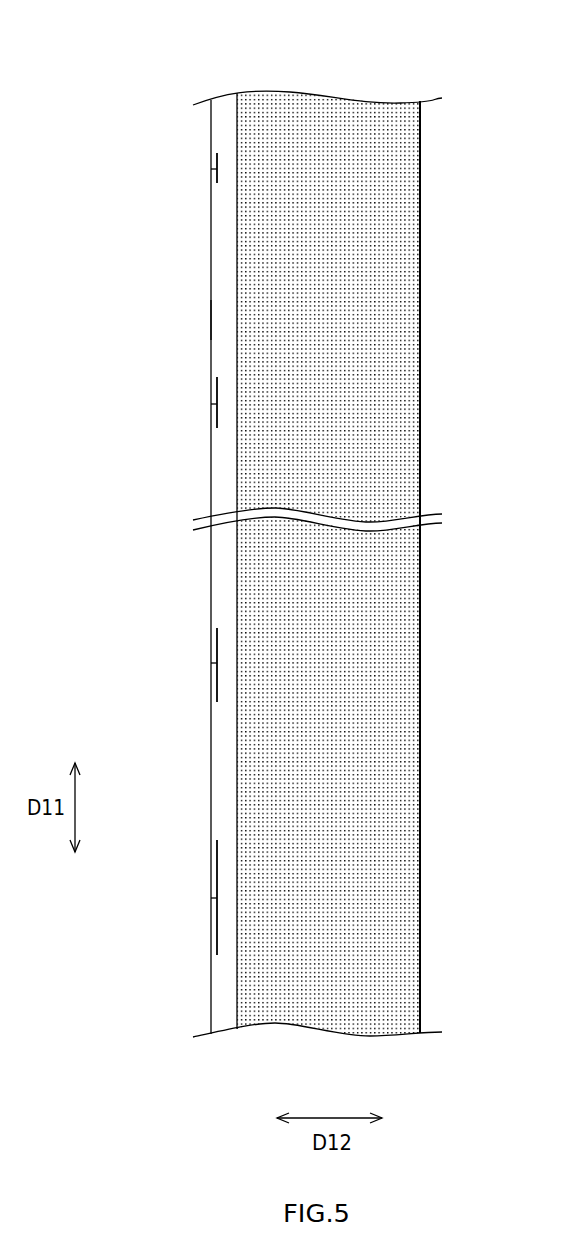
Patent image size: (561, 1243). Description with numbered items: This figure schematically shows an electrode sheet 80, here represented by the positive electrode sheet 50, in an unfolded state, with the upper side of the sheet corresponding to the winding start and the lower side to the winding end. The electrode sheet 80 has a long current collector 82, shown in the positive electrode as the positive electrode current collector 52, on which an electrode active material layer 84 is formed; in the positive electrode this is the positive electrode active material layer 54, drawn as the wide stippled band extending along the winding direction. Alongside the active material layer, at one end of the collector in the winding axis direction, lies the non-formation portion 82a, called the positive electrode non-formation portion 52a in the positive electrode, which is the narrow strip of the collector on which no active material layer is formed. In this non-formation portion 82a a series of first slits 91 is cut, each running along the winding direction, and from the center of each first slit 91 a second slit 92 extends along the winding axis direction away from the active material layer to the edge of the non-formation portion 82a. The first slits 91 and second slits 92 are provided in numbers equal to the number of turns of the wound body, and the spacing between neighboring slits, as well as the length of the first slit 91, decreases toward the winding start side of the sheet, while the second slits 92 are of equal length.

The positive electrode sheet 50 is at (325, 522).
The electrode sheet 80 is at (382, 90).
The positive electrode current collector 52 is at (155, 567).
The current collector 82 is at (155, 567).
The positive electrode non-formation portion 52a is at (155, 320).
The non-formation portion 82a is at (222, 318).
The positive electrode active material layer 54 is at (373, 564).
The electrode active material layer 84 is at (400, 270).
The first slit 91 is at (217, 159).
The second slit 92 is at (212, 169).